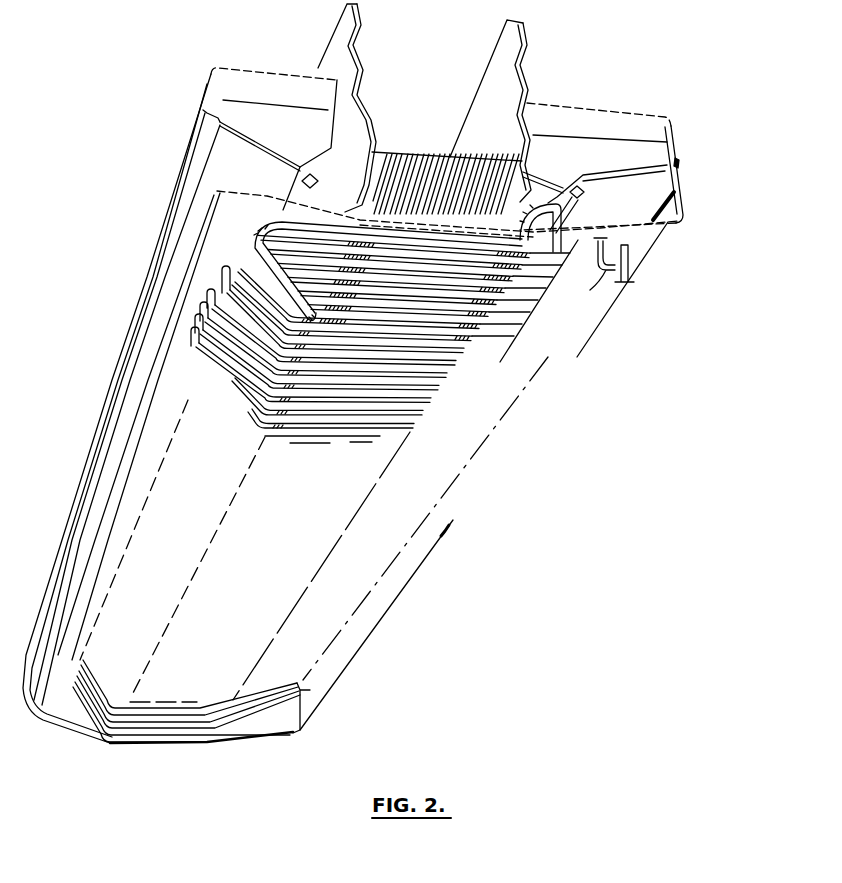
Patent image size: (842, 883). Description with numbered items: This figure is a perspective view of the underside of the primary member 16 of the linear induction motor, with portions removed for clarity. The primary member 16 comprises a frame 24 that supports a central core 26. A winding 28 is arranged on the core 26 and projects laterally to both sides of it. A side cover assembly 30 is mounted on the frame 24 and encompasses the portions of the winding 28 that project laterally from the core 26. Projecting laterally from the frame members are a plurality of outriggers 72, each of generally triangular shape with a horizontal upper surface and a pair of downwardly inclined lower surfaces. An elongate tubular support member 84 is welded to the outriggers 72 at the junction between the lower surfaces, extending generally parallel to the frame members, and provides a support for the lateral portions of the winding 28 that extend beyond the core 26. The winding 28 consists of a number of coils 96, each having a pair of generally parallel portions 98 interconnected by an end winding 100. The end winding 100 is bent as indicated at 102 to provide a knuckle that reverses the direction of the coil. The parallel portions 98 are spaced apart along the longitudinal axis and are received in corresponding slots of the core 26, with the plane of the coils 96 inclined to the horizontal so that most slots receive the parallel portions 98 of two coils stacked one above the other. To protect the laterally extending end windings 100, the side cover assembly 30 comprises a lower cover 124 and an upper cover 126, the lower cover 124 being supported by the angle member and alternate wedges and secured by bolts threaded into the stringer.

The primary member 16 is at (424, 64).
The frame 24 is at (312, 49).
The central core 26 is at (431, 150).
The winding 28 is at (228, 252).
The side cover assembly 30 is at (640, 110).
The outriggers 72 is at (597, 96).
The elongate tubular support member 84 is at (585, 194).
The coils 96 is at (267, 229).
The parallel portions 98 is at (533, 200).
The end winding 100 is at (590, 321).
The bend 102 is at (627, 282).
The lower cover 124 is at (207, 183).
The upper cover 126 is at (200, 94).